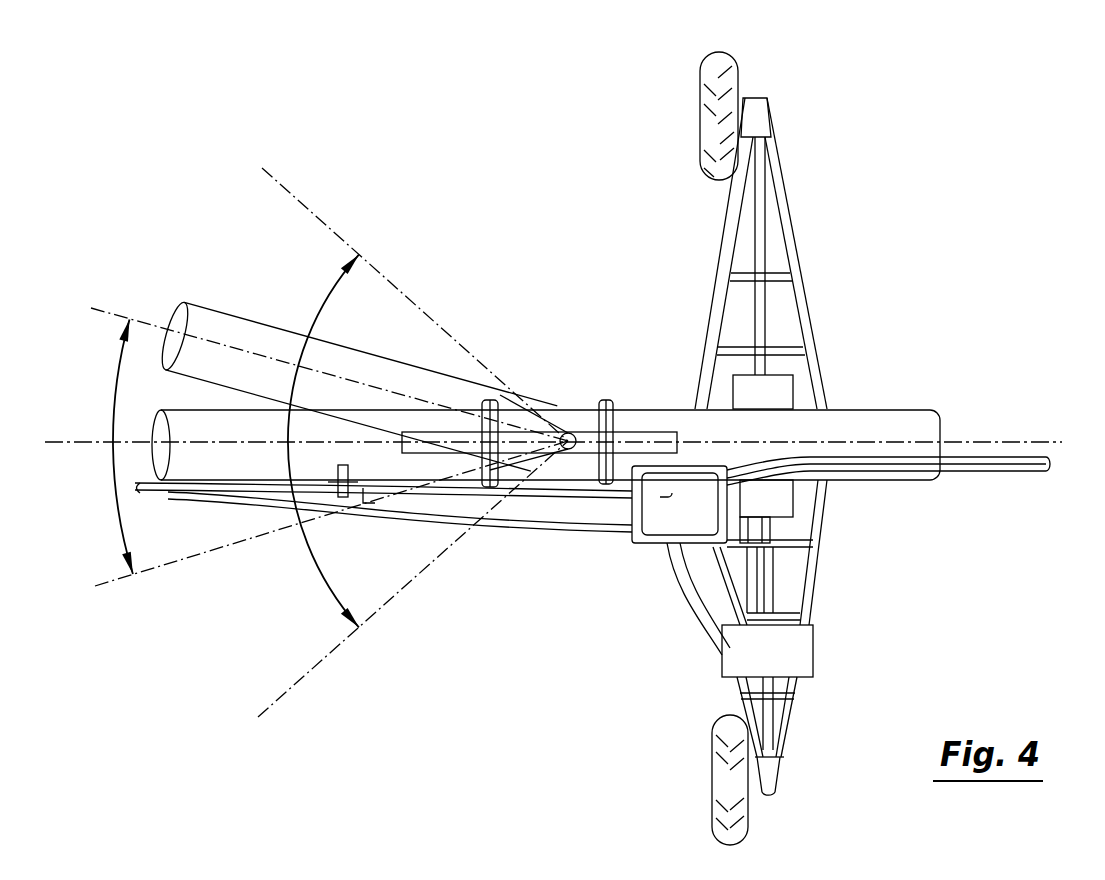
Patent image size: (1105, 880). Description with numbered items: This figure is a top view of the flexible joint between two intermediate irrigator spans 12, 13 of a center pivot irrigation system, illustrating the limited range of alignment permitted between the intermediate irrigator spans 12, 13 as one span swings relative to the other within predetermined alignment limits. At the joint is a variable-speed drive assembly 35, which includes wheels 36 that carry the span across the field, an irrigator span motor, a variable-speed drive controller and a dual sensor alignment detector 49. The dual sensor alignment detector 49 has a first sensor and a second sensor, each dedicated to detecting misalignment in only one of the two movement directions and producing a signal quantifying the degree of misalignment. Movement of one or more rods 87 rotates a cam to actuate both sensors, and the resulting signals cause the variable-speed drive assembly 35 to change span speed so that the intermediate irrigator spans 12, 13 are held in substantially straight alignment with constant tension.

The intermediate irrigator span 12 is at (870, 408).
The intermediate irrigator span 13 is at (268, 325).
The variable-speed drive assembly 35 is at (660, 518).
The wheels 36 is at (698, 120).
The dual sensor alignment detector 49 is at (701, 642).
The rods 87 is at (537, 498).